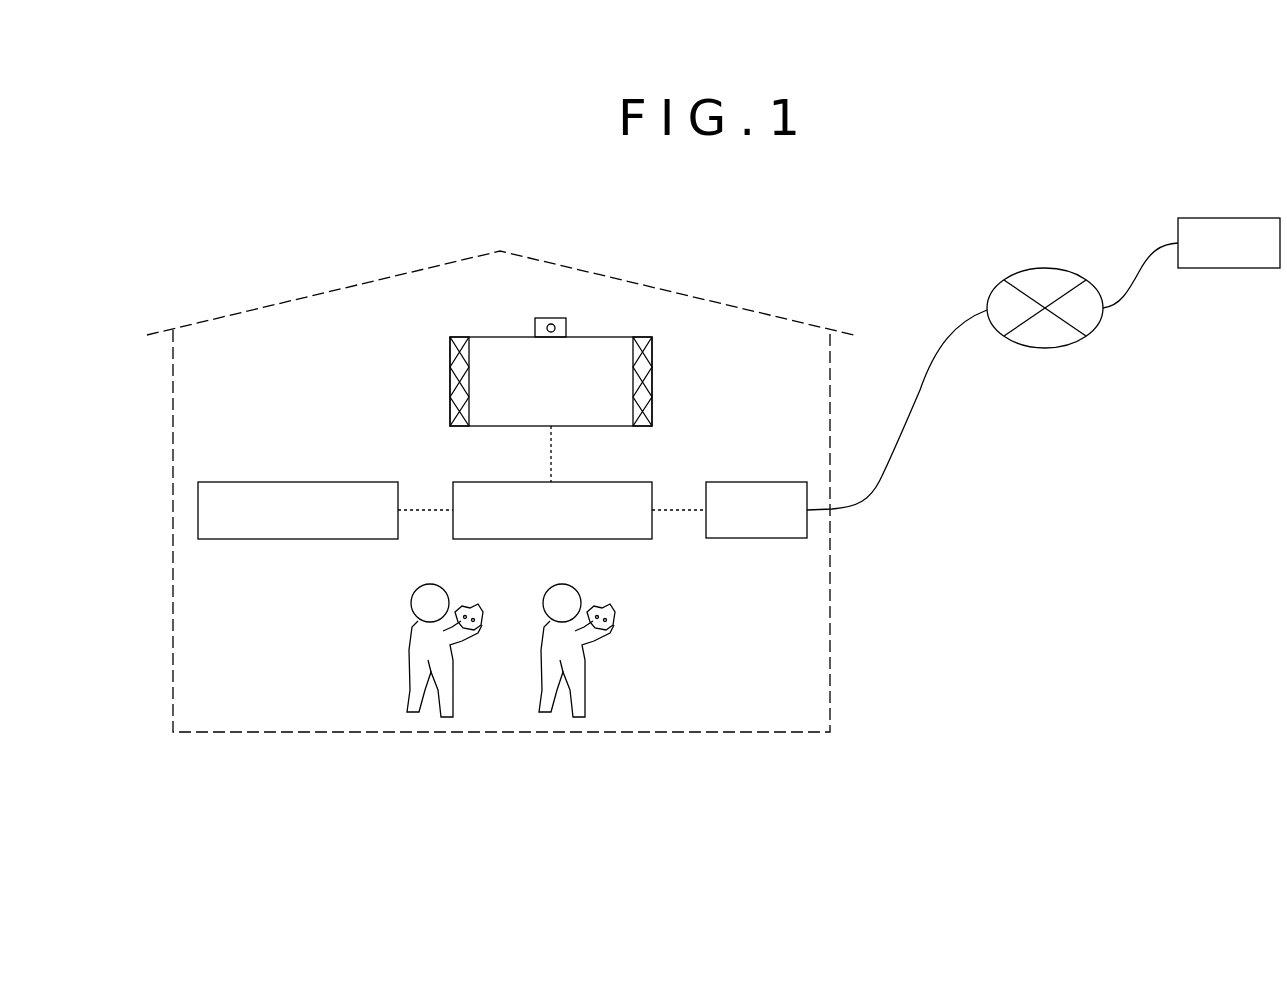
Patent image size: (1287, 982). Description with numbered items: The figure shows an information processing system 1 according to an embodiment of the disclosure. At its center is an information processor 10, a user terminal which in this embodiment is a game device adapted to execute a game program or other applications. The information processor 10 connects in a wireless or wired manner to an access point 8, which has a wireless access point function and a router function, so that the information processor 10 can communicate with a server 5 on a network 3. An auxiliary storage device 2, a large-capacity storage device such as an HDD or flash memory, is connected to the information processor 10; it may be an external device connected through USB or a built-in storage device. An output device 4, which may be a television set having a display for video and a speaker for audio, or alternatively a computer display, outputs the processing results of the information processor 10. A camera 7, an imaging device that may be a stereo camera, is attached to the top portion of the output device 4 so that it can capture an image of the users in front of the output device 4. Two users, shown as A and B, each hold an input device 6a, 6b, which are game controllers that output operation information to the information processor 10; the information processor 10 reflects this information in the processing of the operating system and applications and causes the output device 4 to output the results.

The information processing system 1 is at (703, 804).
The auxiliary storage device 2 is at (300, 482).
The network 3 is at (1048, 268).
The output device 4 is at (603, 337).
The server 5 is at (1232, 218).
The input device 6a is at (477, 612).
The input device 6b is at (609, 612).
The camera 7 is at (553, 318).
The access point 8 is at (754, 482).
The information processor 10 is at (601, 482).